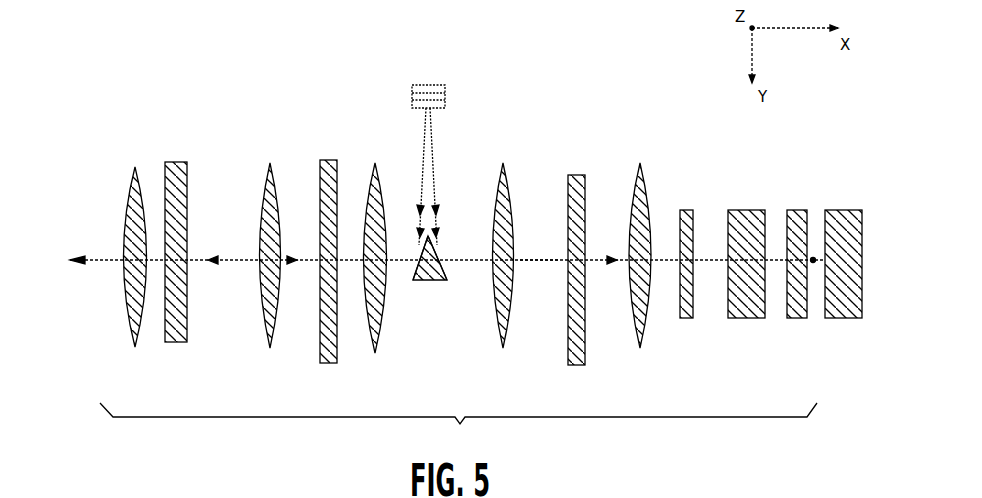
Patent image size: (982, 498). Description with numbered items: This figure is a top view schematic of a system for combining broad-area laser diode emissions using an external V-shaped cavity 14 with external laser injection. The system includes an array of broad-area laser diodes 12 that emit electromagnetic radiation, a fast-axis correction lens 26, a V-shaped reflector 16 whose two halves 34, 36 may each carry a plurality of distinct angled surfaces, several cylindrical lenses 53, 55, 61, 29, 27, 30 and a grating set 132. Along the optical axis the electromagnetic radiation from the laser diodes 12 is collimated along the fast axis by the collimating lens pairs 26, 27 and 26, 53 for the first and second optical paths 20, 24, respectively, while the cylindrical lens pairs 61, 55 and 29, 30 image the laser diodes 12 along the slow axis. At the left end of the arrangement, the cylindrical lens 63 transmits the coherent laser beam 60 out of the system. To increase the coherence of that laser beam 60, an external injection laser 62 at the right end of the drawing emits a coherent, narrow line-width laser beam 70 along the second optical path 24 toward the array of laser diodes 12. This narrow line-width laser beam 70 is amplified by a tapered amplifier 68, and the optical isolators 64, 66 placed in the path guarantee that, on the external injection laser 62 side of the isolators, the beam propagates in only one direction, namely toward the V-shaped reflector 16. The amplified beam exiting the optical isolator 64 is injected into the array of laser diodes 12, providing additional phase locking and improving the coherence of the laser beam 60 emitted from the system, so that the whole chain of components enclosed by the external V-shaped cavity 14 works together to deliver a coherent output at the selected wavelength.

The array of broad-area laser diodes 12 is at (454, 135).
The external V-shaped cavity 14 is at (458, 425).
The V-shaped reflector 16 is at (436, 284).
The first optical path 20 is at (226, 262).
The second optical path 24 is at (541, 262).
The fast-axis correction lens 26 is at (446, 101).
The cylindrical lens 27 is at (328, 160).
The cylindrical lens 29 is at (375, 353).
The cylindrical lens 30 is at (270, 163).
The half of V-shaped reflector 34 is at (444, 276).
The half of V-shaped reflector 36 is at (417, 276).
The cylindrical lens 53 is at (577, 175).
The cylindrical lens 55 is at (645, 170).
The laser beam 60 is at (90, 257).
The cylindrical lens 61 is at (504, 167).
The external injection laser 62 is at (862, 278).
The cylindrical lens 63 is at (135, 167).
The optical isolator 64 is at (688, 210).
The optical isolator 66 is at (797, 210).
The tapered amplifier 68 is at (745, 210).
The narrow line-width laser beam 70 is at (813, 256).
The grating set 132 is at (176, 162).